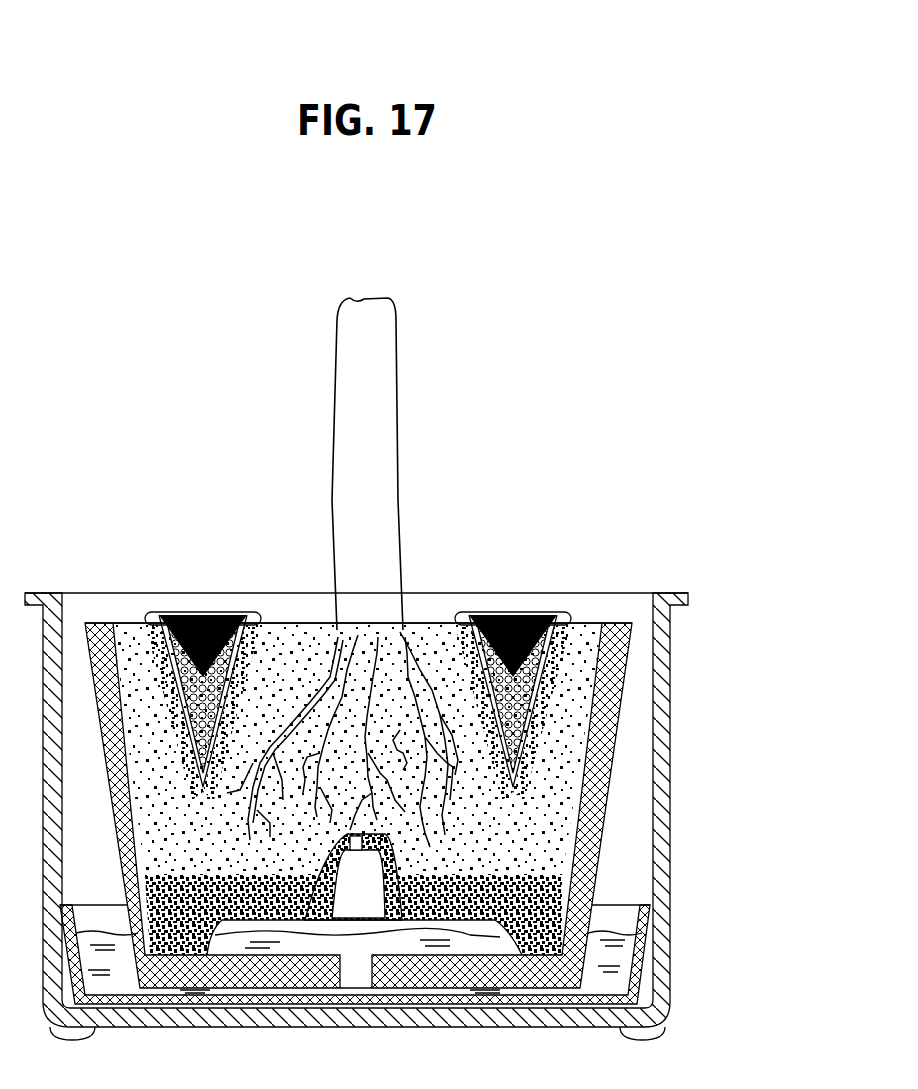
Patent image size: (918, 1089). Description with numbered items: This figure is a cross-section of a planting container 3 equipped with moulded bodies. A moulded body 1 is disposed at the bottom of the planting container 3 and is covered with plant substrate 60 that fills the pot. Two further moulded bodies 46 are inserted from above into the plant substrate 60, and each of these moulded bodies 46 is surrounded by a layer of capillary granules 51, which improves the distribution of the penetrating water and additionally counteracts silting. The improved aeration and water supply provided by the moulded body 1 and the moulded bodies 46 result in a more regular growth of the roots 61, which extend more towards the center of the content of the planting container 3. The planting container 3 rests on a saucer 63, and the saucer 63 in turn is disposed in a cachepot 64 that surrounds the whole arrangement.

The moulded body 1 is at (600, 843).
The planting container 3 is at (608, 785).
The moulded bodies 46 is at (205, 613).
The capillary granules 51 is at (597, 625).
The plant substrate 60 is at (423, 657).
The roots 61 is at (342, 636).
The saucer 63 is at (672, 905).
The cachepot 64 is at (660, 850).